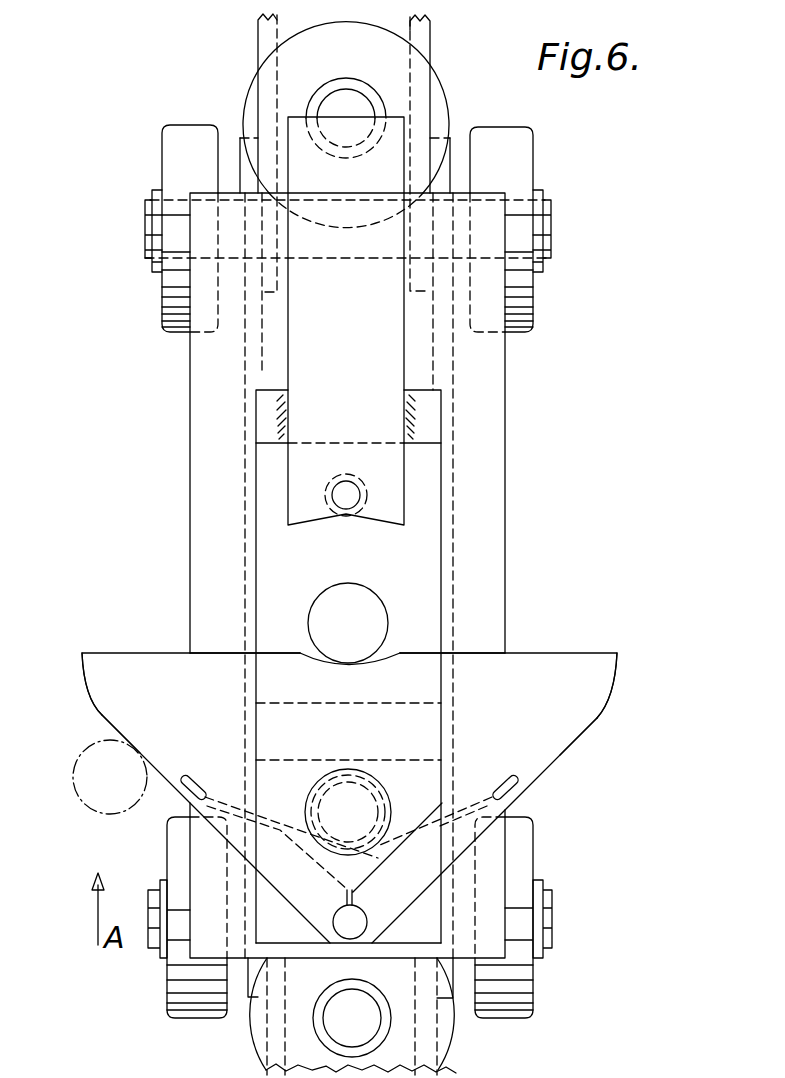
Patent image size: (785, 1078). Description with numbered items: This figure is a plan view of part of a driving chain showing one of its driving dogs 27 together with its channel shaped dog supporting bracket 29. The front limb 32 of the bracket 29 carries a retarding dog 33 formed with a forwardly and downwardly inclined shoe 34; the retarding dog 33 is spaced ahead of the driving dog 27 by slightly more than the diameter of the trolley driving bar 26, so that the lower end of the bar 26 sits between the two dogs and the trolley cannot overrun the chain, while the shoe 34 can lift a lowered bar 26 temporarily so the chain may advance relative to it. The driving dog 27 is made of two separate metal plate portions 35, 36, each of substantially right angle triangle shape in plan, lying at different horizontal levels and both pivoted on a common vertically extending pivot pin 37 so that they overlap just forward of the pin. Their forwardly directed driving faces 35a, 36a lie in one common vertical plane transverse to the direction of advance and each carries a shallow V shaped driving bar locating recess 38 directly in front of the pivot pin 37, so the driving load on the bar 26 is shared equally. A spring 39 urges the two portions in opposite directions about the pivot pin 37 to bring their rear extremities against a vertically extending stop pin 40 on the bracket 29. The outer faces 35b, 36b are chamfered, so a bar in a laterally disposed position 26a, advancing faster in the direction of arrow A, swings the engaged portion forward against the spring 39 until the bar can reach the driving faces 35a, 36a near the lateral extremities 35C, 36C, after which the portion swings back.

The trolley driving bar 26 is at (362, 596).
The laterally disposed driving bar position 26a is at (108, 790).
The driving dog 27 is at (192, 683).
The dog supporting bracket 29 is at (430, 583).
The front limb 32 is at (430, 428).
The retarding dog 33 is at (305, 512).
The shoe 34 is at (346, 321).
The dog portion 35 is at (118, 660).
The driving face 35a is at (236, 634).
The outer face 35b is at (100, 722).
The lateral extremity 35C is at (82, 653).
The dog portion 36 is at (537, 665).
The driving face 36a is at (498, 634).
The outer face 36b is at (660, 744).
The lateral extremity 36C is at (660, 634).
The pivot pin 37 is at (373, 802).
The driving bar locating recess 38 is at (384, 660).
The spring 39 is at (226, 797).
The stop pin 40 is at (362, 912).